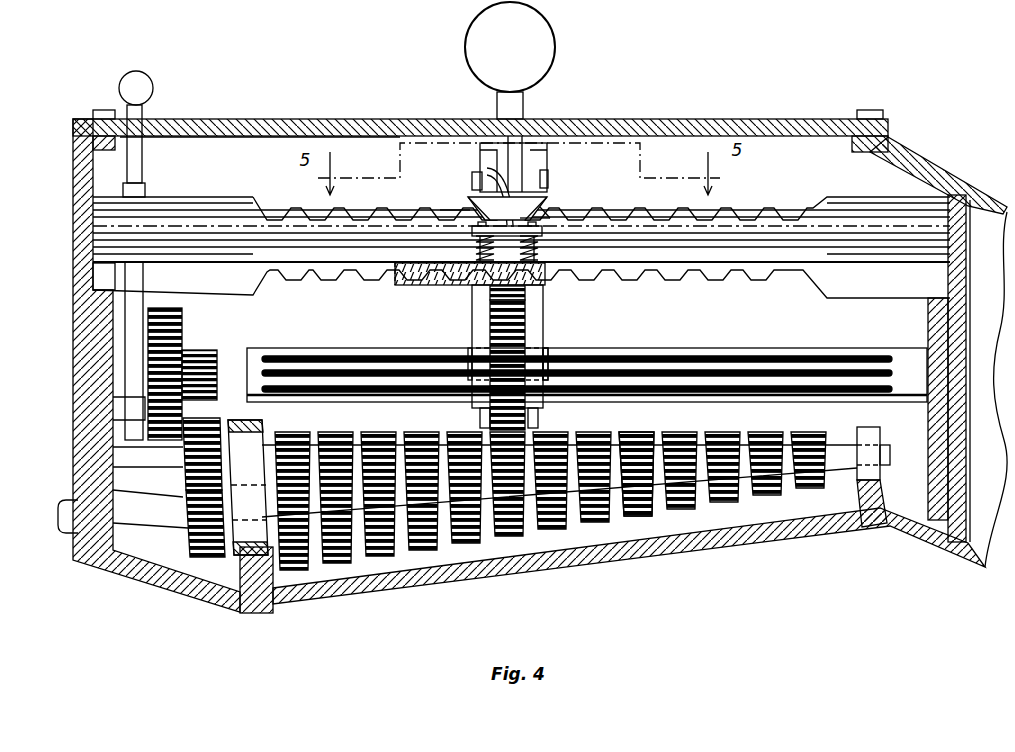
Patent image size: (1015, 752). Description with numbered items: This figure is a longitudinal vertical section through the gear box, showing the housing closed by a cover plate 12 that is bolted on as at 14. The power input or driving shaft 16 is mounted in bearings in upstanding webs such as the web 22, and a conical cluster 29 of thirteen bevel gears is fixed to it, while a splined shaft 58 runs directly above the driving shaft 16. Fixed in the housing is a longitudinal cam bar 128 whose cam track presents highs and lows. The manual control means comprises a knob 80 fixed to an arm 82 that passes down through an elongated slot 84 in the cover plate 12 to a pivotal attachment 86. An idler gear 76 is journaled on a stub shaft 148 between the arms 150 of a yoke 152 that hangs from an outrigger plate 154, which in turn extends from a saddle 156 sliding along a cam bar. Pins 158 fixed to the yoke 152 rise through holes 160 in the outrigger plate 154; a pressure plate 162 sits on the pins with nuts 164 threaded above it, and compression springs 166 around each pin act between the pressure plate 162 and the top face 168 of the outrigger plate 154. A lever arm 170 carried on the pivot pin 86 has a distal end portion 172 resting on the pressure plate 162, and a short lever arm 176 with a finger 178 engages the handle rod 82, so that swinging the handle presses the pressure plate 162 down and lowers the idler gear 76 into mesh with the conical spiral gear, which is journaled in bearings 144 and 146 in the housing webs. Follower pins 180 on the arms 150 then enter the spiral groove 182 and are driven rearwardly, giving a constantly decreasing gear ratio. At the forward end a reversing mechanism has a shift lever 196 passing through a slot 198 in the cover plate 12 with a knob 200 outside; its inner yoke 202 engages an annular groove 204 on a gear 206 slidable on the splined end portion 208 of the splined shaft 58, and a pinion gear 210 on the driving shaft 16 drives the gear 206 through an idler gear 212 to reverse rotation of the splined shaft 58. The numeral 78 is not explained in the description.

The cover plate 12 is at (716, 117).
The bolt 14 is at (867, 110).
The driving shaft 16 is at (58, 511).
The upstanding web 22 is at (256, 575).
The conical cluster 29 is at (388, 430).
The splined shaft 58 is at (745, 349).
The idler gear 76 is at (508, 334).
The shift rod 78 is at (556, 106).
The knob 80 is at (496, 44).
The arm 82 is at (497, 107).
The elongated slot 84 is at (286, 127).
The pivotal attachment 86 is at (536, 178).
The cam bar 128 is at (660, 252).
The bearing 144 is at (250, 465).
The bearing 146 is at (868, 432).
The stub shaft 148 is at (549, 352).
The arm 150 is at (472, 321).
The yoke 152 is at (480, 298).
The outrigger plate 154 is at (420, 287).
The saddle 156 is at (414, 212).
The pin 158 is at (545, 240).
The hole 160 is at (545, 255).
The pressure plate 162 is at (538, 221).
The nut 164 is at (552, 216).
The compression spring 166 is at (474, 251).
The top face 168 is at (400, 262).
The lever arm 170 is at (478, 205).
The distal end portion 172 is at (556, 212).
The short lever arm 176 is at (478, 166).
The finger 178 is at (480, 150).
The follower pin 180 is at (480, 418).
The spiral groove 182 is at (620, 442).
The shift lever 196 is at (143, 114).
The slot 198 is at (190, 127).
The knob 200 is at (152, 90).
The yoke 202 is at (140, 342).
The annular groove 204 is at (135, 394).
The gear 206 is at (176, 332).
The splined end portion 208 is at (194, 366).
The pinion gear 210 is at (190, 540).
The idler gear 212 is at (200, 460).